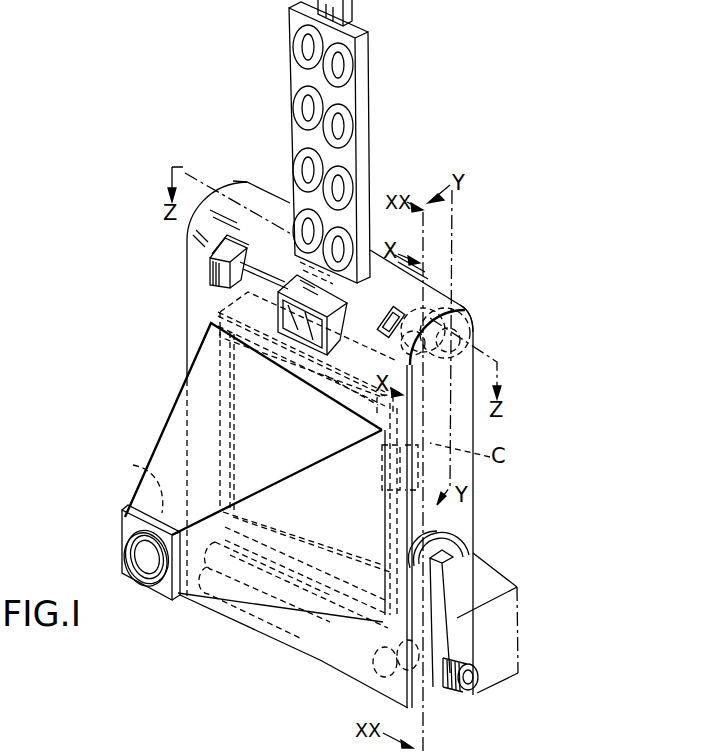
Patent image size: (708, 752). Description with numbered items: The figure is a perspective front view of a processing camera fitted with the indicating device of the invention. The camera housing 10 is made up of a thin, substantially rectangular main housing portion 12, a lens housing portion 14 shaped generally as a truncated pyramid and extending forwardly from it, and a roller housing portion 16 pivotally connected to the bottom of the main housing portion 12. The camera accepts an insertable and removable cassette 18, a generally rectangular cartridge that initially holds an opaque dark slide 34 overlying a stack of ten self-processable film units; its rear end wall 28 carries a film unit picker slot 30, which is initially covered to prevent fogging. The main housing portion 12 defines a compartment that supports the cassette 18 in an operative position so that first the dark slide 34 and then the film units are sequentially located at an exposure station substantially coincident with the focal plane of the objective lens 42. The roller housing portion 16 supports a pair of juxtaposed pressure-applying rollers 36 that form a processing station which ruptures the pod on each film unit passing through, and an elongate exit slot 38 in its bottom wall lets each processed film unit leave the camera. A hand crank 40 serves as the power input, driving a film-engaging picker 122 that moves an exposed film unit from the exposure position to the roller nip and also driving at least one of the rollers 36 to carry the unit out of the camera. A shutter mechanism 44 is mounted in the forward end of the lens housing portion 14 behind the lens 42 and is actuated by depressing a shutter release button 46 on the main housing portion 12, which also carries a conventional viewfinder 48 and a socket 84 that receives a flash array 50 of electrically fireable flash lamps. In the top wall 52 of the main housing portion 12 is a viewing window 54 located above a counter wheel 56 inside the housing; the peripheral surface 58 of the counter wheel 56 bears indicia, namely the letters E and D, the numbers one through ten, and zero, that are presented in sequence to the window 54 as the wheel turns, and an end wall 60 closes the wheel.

The camera housing 10 is at (226, 611).
The main housing portion 12 is at (473, 474).
The lens housing portion 14 is at (165, 428).
The roller housing portion 16 is at (450, 695).
The cassette 18 is at (216, 384).
The rear end wall 28 is at (325, 375).
The film unit picker slot 30 is at (372, 412).
The dark slide 34 is at (247, 423).
The pressure-applying rollers 36 is at (373, 678).
The exit slot 38 is at (278, 637).
The hand crank 40 is at (450, 570).
The objective lens 42 is at (130, 555).
The shutter mechanism 44 is at (135, 485).
The shutter release button 46 is at (213, 270).
The viewfinder 48 is at (283, 322).
The flash array 50 is at (368, 65).
The top wall 52 is at (243, 188).
The viewing window 54 is at (380, 338).
The counter wheel 56 is at (473, 337).
The peripheral surface 58 is at (408, 302).
The end wall 60 is at (452, 300).
The socket 84 is at (300, 265).
The film-engaging picker 122 is at (378, 447).